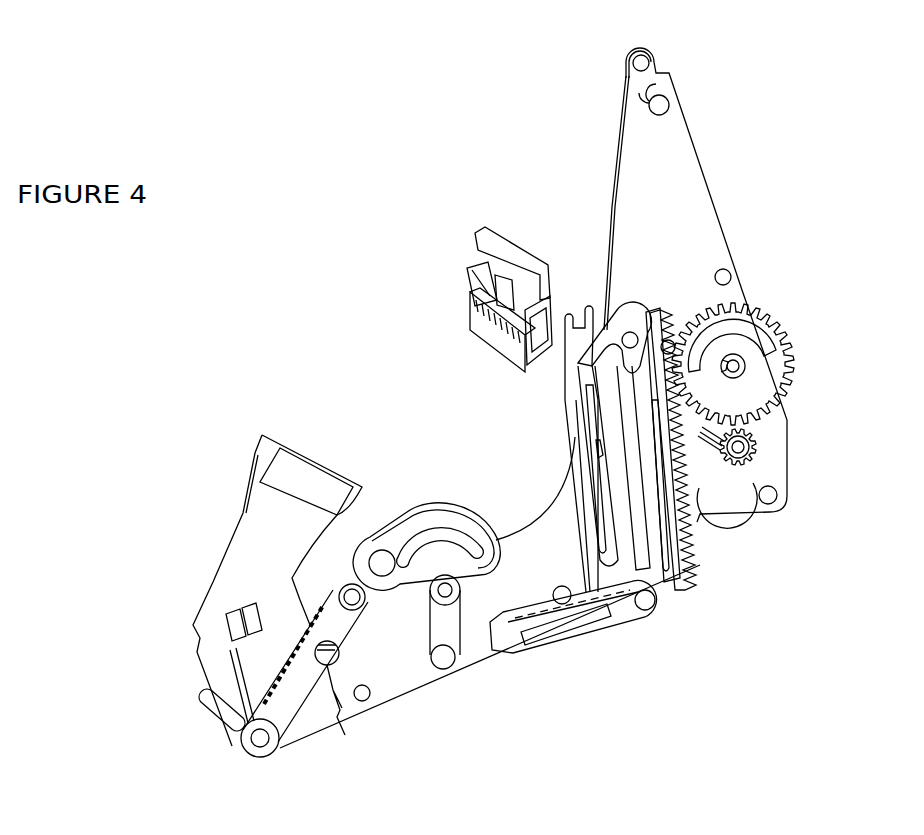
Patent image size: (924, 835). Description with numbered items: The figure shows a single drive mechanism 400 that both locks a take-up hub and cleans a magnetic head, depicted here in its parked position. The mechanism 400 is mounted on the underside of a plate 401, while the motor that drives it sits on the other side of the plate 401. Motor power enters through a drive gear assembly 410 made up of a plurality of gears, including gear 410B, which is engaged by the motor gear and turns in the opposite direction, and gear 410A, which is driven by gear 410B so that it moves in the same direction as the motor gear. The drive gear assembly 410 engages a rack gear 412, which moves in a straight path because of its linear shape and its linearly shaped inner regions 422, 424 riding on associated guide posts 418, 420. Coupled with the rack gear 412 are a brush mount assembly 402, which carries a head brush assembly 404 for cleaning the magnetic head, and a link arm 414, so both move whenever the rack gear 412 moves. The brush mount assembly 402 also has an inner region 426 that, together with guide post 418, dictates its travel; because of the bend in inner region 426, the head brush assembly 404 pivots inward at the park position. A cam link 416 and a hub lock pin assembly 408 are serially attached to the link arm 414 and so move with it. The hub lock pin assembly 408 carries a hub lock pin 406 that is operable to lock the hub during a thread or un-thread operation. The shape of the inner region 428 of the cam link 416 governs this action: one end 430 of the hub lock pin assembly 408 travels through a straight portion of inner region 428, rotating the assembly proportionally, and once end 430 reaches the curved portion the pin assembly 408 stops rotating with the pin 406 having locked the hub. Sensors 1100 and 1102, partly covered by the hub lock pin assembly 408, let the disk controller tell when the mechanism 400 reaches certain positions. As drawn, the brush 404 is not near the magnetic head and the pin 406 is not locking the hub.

The single drive mechanism 400 is at (320, 316).
The plate 401 is at (674, 232).
The brush mount assembly 402 is at (563, 411).
The head brush assembly 404 is at (465, 246).
The hub lock pin 406 is at (200, 703).
The hub lock pin assembly 408 is at (258, 705).
The drive gear assembly 410 is at (795, 322).
The gear 410A is at (749, 412).
The gear 410B is at (765, 449).
The rack gear 412 is at (692, 540).
The link arm 414 is at (568, 645).
The cam link 416 is at (378, 550).
The guide post 418 is at (628, 388).
The guide post 420 is at (671, 467).
The inner region 422 is at (662, 530).
The inner region 424 is at (627, 388).
The inner region 426 is at (594, 440).
The inner region 428 is at (446, 528).
The end 430 is at (378, 562).
The sensor 1100 is at (224, 610).
The sensor 1102 is at (263, 672).